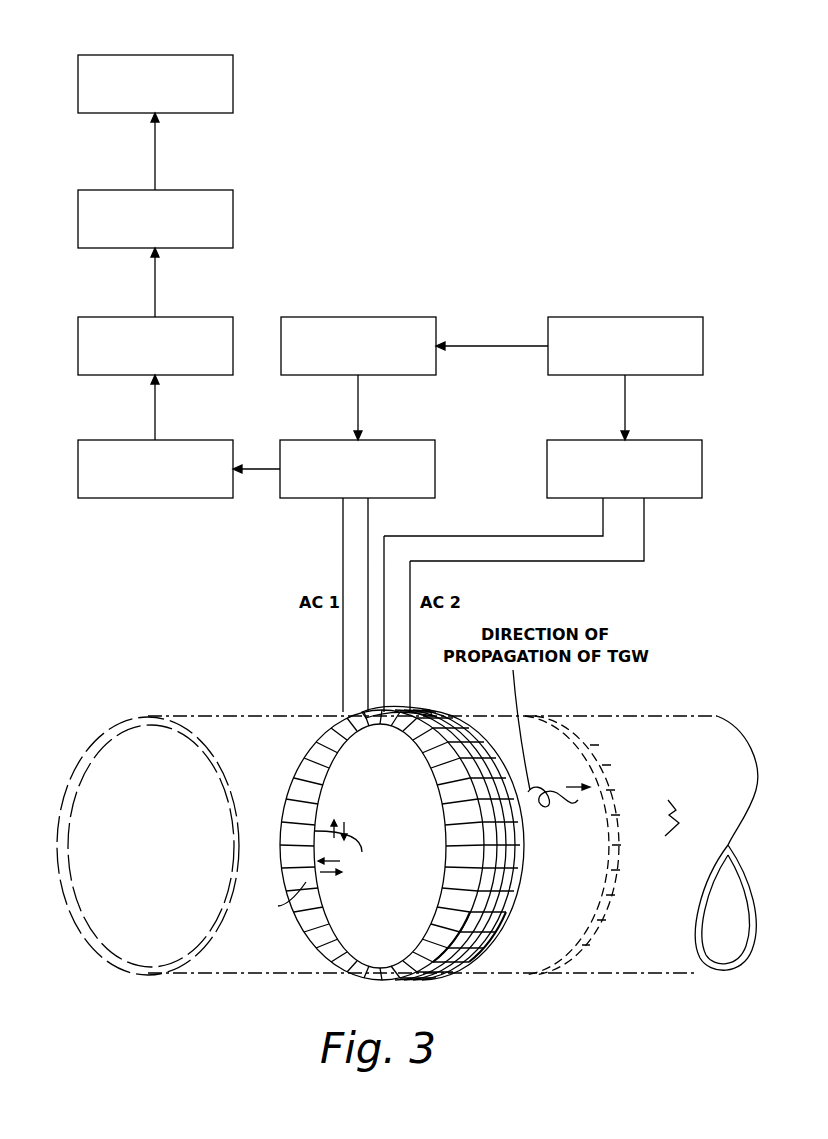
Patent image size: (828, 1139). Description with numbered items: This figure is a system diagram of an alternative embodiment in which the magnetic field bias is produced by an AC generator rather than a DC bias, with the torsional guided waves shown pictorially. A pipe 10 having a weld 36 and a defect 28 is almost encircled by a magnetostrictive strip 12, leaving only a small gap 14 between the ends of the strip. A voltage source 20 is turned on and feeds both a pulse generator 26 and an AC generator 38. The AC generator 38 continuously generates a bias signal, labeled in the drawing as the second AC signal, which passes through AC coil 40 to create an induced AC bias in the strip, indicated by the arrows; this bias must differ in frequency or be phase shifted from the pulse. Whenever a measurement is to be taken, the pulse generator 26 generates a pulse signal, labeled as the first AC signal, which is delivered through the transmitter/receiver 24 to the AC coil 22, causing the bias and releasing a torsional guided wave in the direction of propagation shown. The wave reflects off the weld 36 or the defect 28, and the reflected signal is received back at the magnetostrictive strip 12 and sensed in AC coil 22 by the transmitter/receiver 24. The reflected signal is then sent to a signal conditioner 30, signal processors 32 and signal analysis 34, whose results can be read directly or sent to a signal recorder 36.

The pipe 10 is at (617, 712).
The magnetostrictive strip 12 is at (400, 843).
The gap 14 is at (399, 719).
The voltage source 20 is at (673, 317).
The AC coil 22 is at (486, 934).
The transmitter/receiver 24 is at (398, 440).
The pulse generator 26 is at (392, 317).
The defect 28 is at (681, 822).
The signal conditioner 30 is at (193, 440).
The signal processors 32 is at (193, 317).
The signal analysis 34 is at (193, 190).
The signal recorder 36 is at (177, 55).
The AC generator 38 is at (673, 440).
The AC coil 40 is at (466, 785).